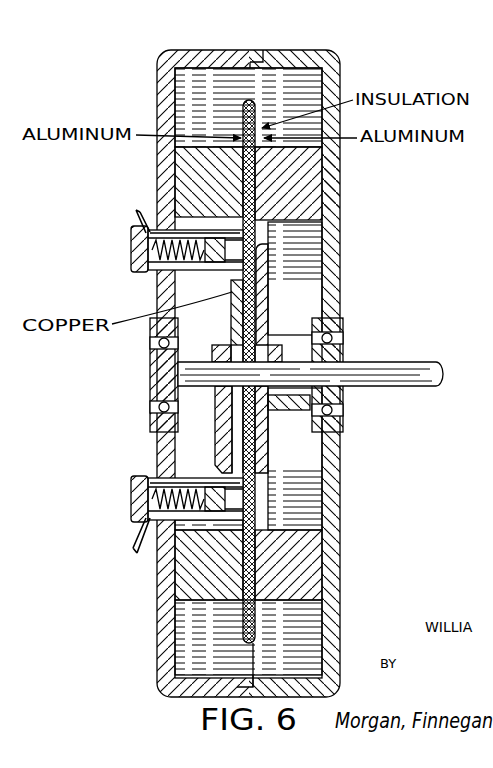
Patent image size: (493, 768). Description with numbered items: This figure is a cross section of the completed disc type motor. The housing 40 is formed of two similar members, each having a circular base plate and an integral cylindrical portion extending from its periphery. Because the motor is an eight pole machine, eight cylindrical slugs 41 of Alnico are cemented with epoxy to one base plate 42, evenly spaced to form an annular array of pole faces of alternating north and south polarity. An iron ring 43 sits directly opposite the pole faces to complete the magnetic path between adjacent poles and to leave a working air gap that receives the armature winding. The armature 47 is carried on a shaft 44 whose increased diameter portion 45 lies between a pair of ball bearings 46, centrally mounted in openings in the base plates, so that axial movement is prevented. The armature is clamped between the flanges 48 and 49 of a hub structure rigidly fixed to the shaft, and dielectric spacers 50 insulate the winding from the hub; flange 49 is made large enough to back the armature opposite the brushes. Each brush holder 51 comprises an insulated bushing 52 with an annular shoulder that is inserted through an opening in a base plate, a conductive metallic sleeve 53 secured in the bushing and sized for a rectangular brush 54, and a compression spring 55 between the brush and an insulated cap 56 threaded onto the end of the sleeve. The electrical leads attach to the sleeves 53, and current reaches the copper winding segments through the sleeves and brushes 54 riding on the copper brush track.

The housing 40 is at (304, 45).
The cylindrical slugs 41 is at (310, 185).
The base plate 42 is at (338, 214).
The iron ring 43 is at (193, 169).
The shaft 44 is at (400, 367).
The increased diameter portion 45 is at (204, 389).
The ball bearings 46 is at (338, 352).
The armature 47 is at (253, 112).
The flange 48 is at (229, 332).
The flange 49 is at (268, 326).
The dielectric spacers 50 is at (256, 298).
The brush holders 51 is at (130, 263).
The insulated bushing 52 is at (178, 219).
The conductive metallic sleeve 53 is at (200, 268).
The rectangular brush 54 is at (240, 280).
The compression spring 55 is at (160, 268).
The insulated cap 56 is at (143, 247).